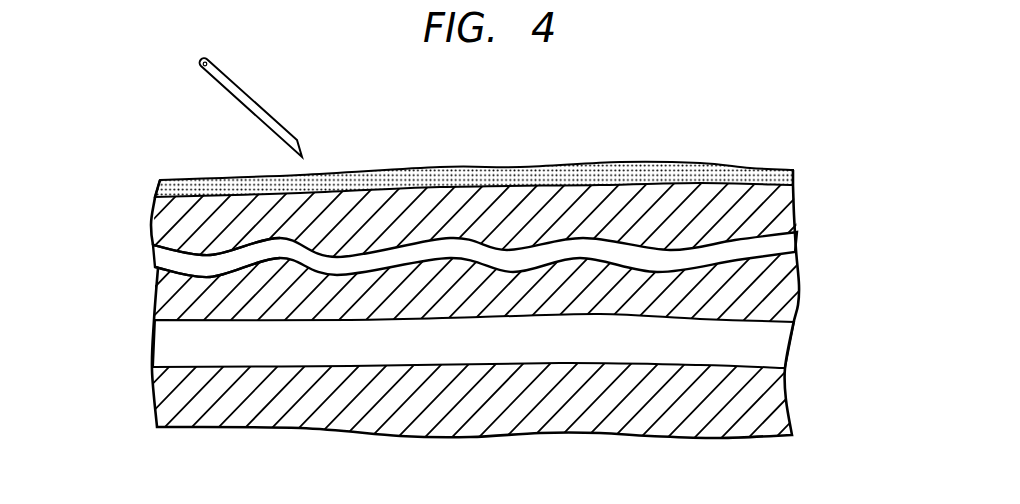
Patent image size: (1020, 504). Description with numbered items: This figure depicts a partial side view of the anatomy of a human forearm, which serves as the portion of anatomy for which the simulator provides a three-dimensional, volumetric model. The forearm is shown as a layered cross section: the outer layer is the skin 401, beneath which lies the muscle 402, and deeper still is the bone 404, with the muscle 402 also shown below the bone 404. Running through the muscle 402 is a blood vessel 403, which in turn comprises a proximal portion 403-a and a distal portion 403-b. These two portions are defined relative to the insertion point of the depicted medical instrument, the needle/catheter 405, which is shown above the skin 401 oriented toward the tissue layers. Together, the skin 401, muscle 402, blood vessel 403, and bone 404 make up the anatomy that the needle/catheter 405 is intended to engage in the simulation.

The skin 401 is at (757, 172).
The muscle 402 is at (797, 290).
The blood vessel 403 is at (158, 258).
The proximal portion 403-a is at (158, 245).
The distal portion 403-b is at (158, 272).
The bone 404 is at (762, 345).
The needle/catheter 405 is at (253, 107).